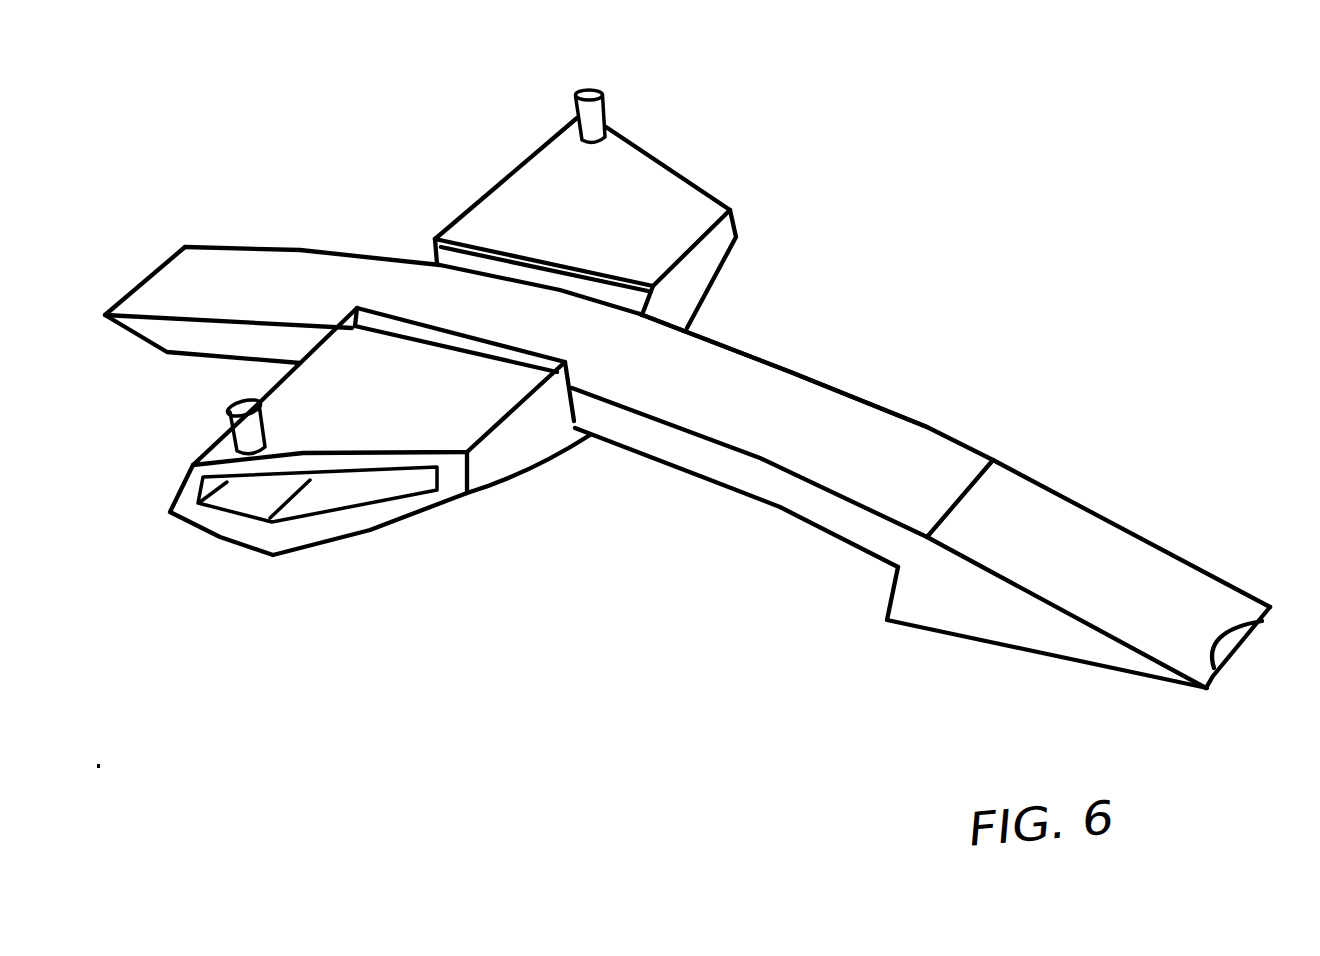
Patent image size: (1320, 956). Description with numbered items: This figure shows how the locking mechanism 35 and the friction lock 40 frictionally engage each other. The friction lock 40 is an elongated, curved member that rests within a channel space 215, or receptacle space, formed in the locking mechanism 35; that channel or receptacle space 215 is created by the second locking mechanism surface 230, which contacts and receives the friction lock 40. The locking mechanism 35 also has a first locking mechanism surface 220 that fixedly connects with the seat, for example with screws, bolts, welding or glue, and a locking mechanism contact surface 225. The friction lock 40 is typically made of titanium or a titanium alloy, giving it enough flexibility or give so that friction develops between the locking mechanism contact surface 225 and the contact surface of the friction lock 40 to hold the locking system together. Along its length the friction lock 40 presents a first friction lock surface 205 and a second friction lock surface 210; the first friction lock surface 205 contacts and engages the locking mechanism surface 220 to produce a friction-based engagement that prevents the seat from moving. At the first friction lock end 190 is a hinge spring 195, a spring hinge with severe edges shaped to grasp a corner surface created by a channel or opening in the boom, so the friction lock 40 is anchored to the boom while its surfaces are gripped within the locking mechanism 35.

The locking mechanism 35 is at (767, 210).
The friction lock 40 is at (970, 380).
The first friction lock end 190 is at (1252, 547).
The hinge spring 195 is at (1173, 491).
The first friction lock surface 205 is at (646, 521).
The second friction lock surface 210 is at (760, 300).
The channel space 215 is at (427, 255).
The first locking mechanism surface 220 is at (183, 273).
The locking mechanism contact surface 225 is at (777, 2).
The second locking mechanism surface 230 is at (538, 530).